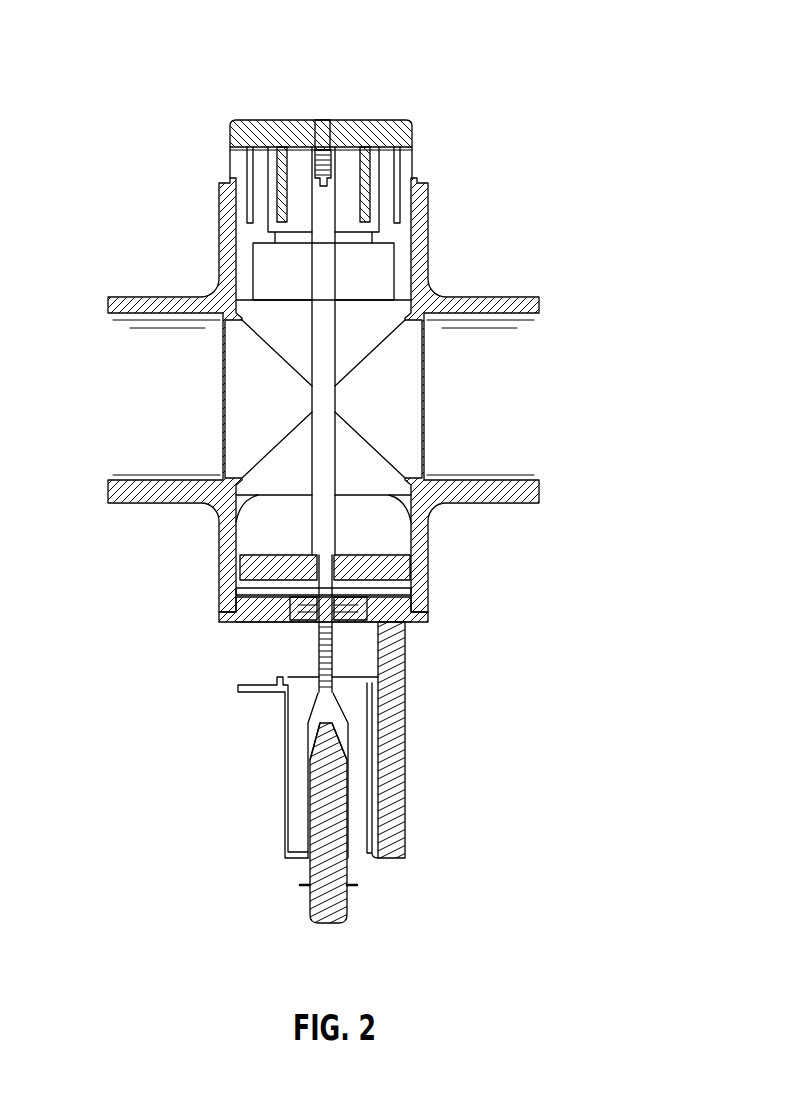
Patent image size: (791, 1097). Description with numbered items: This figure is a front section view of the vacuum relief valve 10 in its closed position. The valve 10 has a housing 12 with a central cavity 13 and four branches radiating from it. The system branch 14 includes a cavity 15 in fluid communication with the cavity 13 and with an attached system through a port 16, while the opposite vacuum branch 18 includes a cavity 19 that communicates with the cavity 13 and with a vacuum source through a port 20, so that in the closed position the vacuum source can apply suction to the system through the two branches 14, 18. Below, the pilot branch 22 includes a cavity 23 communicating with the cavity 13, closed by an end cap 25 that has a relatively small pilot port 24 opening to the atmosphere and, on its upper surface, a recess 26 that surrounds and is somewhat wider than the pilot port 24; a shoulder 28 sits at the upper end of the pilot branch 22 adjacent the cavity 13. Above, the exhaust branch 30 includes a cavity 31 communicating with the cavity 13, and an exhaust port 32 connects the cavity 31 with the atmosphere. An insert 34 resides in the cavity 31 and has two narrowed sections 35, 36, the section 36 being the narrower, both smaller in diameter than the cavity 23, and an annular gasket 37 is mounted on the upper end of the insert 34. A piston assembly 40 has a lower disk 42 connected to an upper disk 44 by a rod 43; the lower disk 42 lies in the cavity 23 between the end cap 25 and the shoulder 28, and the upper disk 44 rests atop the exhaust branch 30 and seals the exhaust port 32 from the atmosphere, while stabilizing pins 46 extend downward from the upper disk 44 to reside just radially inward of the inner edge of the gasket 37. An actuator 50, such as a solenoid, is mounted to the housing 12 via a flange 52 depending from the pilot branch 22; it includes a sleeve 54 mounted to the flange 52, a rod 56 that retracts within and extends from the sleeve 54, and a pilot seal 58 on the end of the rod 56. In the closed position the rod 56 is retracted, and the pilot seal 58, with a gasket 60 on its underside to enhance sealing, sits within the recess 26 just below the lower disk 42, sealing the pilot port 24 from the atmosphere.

The vacuum relief valve 10 is at (588, 182).
The housing 12 is at (340, 300).
The central cavity 13 is at (405, 365).
The system branch 14 is at (568, 283).
The cavity 15 is at (508, 385).
The port 16 is at (542, 420).
The vacuum branch 18 is at (125, 265).
The cavity 19 is at (120, 404).
The port 20 is at (105, 468).
The pilot branch 22 is at (453, 606).
The cavity 23 is at (397, 568).
The pilot port 24 is at (338, 628).
The end cap 25 is at (262, 623).
The recess 26 is at (305, 632).
The shoulder 28 is at (307, 532).
The exhaust branch 30 is at (442, 172).
The cavity 31 is at (236, 280).
The exhaust port 32 is at (415, 147).
The insert 34 is at (242, 197).
The narrowed section 35 is at (270, 268).
The narrowed section 36 is at (262, 168).
The annular gasket 37 is at (300, 120).
The piston assembly 40 is at (422, 75).
The lower disk 42 is at (352, 596).
The rod 43 is at (262, 500).
The upper disk 44 is at (373, 130).
The stabilizing pins 46 is at (280, 162).
The actuator 50 is at (349, 932).
The flange 52 is at (393, 812).
The sleeve 54 is at (357, 852).
The rod 56 is at (328, 663).
The pilot seal 58 is at (395, 542).
The gasket 60 is at (357, 622).